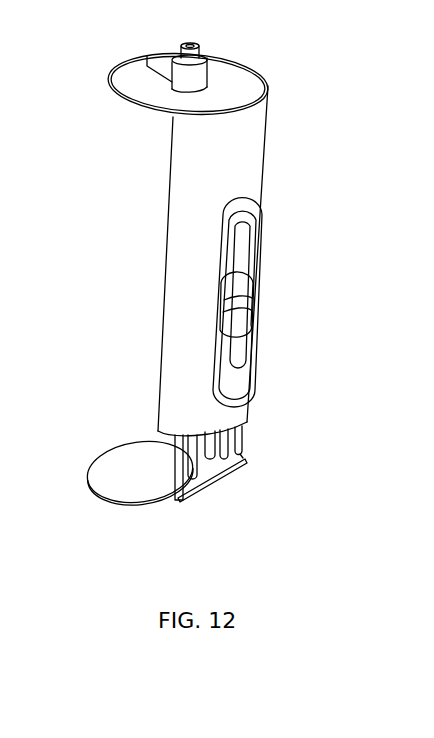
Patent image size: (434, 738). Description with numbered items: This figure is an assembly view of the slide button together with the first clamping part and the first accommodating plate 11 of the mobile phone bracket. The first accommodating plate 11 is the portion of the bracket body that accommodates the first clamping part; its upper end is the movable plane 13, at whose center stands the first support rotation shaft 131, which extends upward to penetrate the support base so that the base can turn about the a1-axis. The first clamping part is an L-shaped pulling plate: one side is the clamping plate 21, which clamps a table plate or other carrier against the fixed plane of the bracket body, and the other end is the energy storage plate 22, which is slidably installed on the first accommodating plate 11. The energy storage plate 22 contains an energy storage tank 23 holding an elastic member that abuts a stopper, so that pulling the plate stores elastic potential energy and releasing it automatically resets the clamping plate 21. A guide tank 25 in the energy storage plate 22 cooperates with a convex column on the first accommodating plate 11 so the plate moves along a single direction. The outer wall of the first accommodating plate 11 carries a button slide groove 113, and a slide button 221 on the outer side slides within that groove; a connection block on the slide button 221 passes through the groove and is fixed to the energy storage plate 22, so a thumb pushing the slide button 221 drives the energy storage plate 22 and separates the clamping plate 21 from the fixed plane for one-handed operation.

The first accommodating plate 11 is at (248, 157).
The movable plane 13 is at (233, 82).
The first support rotation shaft 131 is at (200, 53).
The button slide groove 113 is at (260, 233).
The slide button 221 is at (258, 300).
The clamping plate 21 is at (152, 467).
The energy storage plate 22 is at (210, 472).
The energy storage tank 23 is at (190, 497).
The guide tank 25 is at (227, 451).